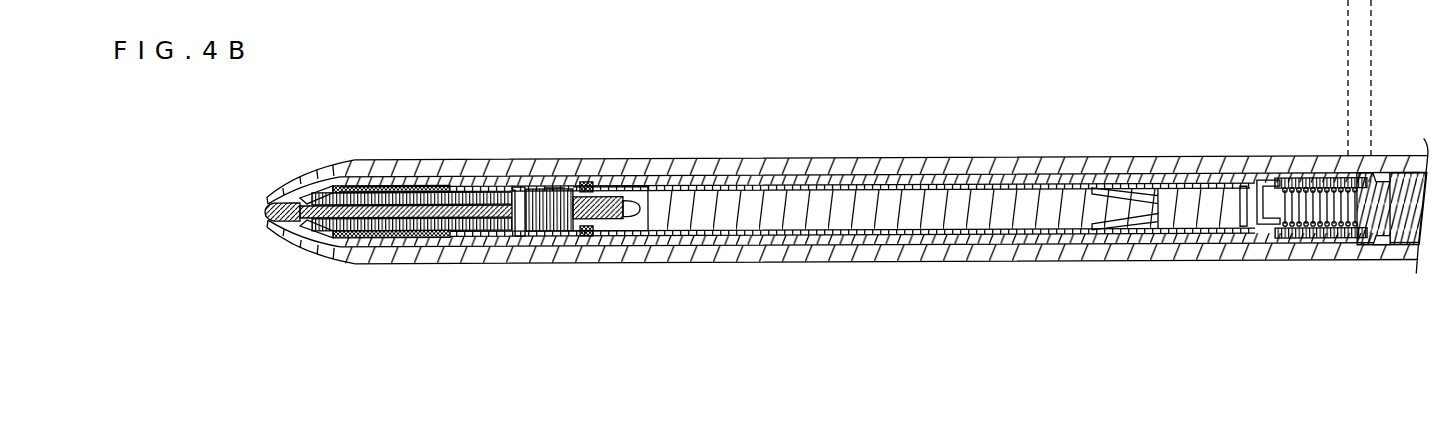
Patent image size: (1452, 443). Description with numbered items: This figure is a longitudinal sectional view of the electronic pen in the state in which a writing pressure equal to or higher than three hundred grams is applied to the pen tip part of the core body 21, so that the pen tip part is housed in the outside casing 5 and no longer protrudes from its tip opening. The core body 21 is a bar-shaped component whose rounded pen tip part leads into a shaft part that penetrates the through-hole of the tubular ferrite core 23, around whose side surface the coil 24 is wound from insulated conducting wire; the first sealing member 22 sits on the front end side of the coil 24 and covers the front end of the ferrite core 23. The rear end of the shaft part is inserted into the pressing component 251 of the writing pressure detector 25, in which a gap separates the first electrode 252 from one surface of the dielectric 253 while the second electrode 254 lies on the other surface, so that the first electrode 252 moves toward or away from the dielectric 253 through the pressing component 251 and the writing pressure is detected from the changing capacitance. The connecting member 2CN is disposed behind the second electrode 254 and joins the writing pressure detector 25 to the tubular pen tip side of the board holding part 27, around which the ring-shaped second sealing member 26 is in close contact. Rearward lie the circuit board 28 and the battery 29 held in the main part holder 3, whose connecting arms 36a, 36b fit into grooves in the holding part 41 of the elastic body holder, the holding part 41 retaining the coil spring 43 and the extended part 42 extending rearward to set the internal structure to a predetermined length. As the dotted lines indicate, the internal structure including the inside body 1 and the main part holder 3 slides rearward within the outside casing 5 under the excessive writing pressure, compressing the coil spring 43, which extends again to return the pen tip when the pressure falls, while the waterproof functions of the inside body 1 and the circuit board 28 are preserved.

The inside body 1 is at (457, 158).
The main part holder 3 is at (684, 158).
The outside casing 5 is at (852, 158).
The core body 21 is at (266, 212).
The first sealing member 22 is at (313, 170).
The ferrite core 23 is at (368, 238).
The coil 24 is at (373, 186).
The writing pressure detector 25 is at (474, 202).
The pressing component 251 is at (493, 230).
The first electrode 252 is at (527, 233).
The dielectric 253 is at (523, 237).
The second electrode 254 is at (590, 255).
The second sealing member 26 is at (585, 183).
The board holding part 27 is at (663, 248).
The circuit board 28 is at (933, 222).
The battery 29 is at (1197, 222).
The connecting arm 36a is at (1292, 242).
The connecting arm 36b is at (1310, 165).
The holding part 41 is at (1337, 228).
The extended part 42 is at (1407, 163).
The coil spring 43 is at (1266, 182).
The connecting member 2CN is at (557, 187).